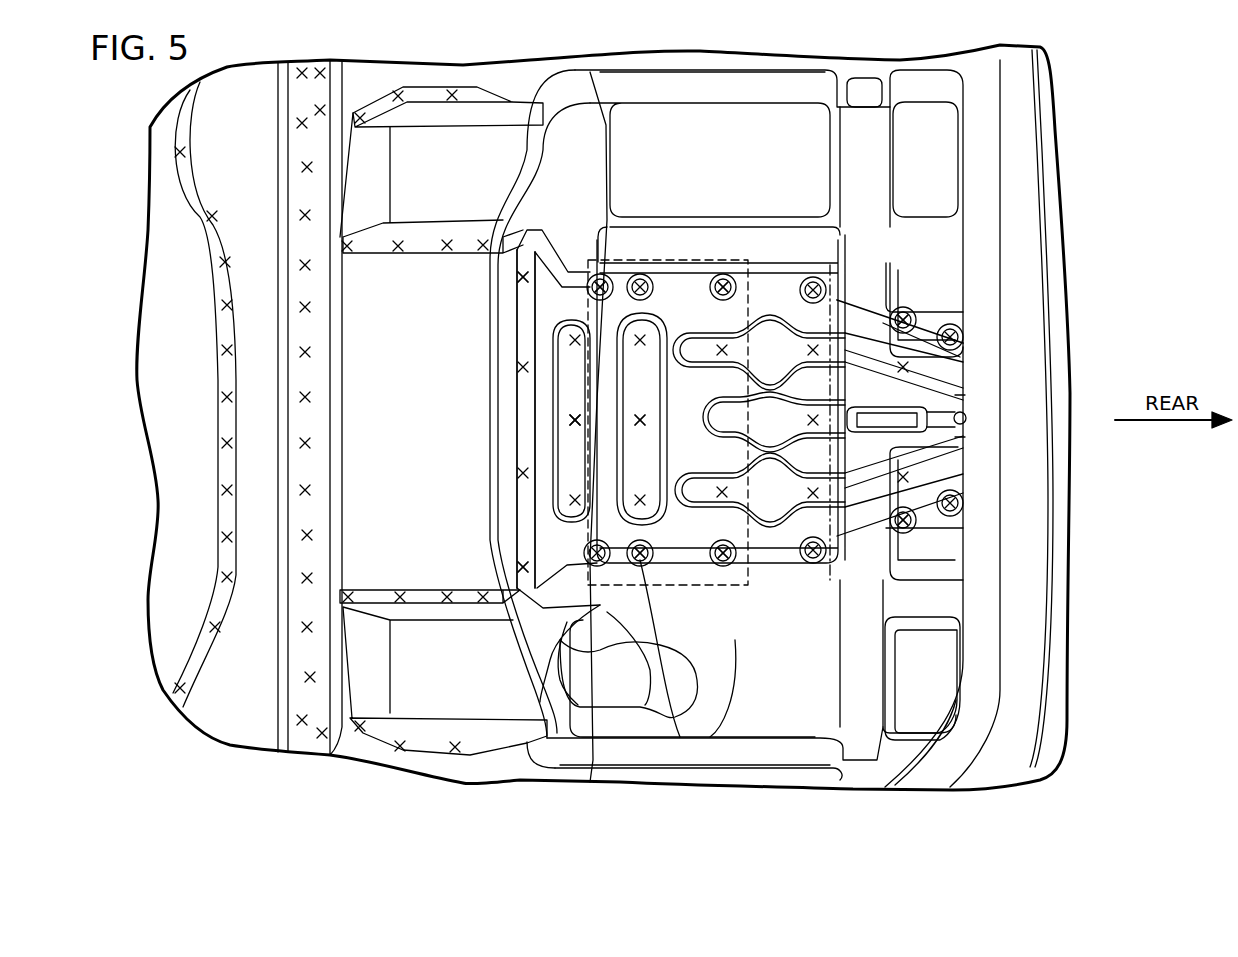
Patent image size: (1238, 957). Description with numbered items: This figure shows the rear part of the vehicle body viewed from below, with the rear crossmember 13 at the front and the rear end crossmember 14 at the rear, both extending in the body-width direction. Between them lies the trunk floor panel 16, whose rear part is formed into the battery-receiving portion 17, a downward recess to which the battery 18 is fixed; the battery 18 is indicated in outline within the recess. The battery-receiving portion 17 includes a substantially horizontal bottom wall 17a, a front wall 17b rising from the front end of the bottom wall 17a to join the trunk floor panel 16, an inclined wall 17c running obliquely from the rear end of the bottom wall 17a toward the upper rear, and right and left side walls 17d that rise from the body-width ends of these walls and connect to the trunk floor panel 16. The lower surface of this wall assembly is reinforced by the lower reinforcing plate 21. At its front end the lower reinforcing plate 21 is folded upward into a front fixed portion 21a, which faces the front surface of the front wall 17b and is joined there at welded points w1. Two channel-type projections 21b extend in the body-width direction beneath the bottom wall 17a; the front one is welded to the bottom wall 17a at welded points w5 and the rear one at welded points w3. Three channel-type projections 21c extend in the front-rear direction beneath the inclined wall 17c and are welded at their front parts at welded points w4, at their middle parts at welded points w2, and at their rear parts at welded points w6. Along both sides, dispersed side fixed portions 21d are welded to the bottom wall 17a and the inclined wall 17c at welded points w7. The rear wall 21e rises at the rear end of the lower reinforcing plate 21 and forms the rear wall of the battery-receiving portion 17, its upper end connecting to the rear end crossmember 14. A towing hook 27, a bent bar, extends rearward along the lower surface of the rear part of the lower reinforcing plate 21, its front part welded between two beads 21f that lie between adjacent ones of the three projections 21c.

The rear crossmember 13 is at (258, 378).
The rear end crossmember 14 is at (1033, 250).
The trunk floor panel 16 is at (392, 436).
The battery-receiving portion 17 is at (470, 462).
The bottom wall 17a is at (700, 665).
The front wall 17b is at (540, 625).
The inclined wall 17c is at (853, 620).
The side walls 17d is at (748, 87).
The battery 18 is at (722, 262).
The lower reinforcing plate 21 is at (505, 392).
The front fixed portion 21a is at (527, 442).
The channel-type projections 21b is at (575, 340).
The channel-type projections 21c is at (775, 315).
The side fixed portions 21d is at (598, 280).
The rear wall 21e is at (950, 340).
The beads 21f is at (858, 380).
The towing hook 27 is at (963, 415).
The welded points w1 is at (523, 313).
The welded points w2 is at (820, 347).
The welded points w3 is at (655, 455).
The welded points w4 is at (722, 348).
The welded points w5 is at (575, 345).
The welded points w6 is at (958, 397).
The welded points w7 is at (605, 285).